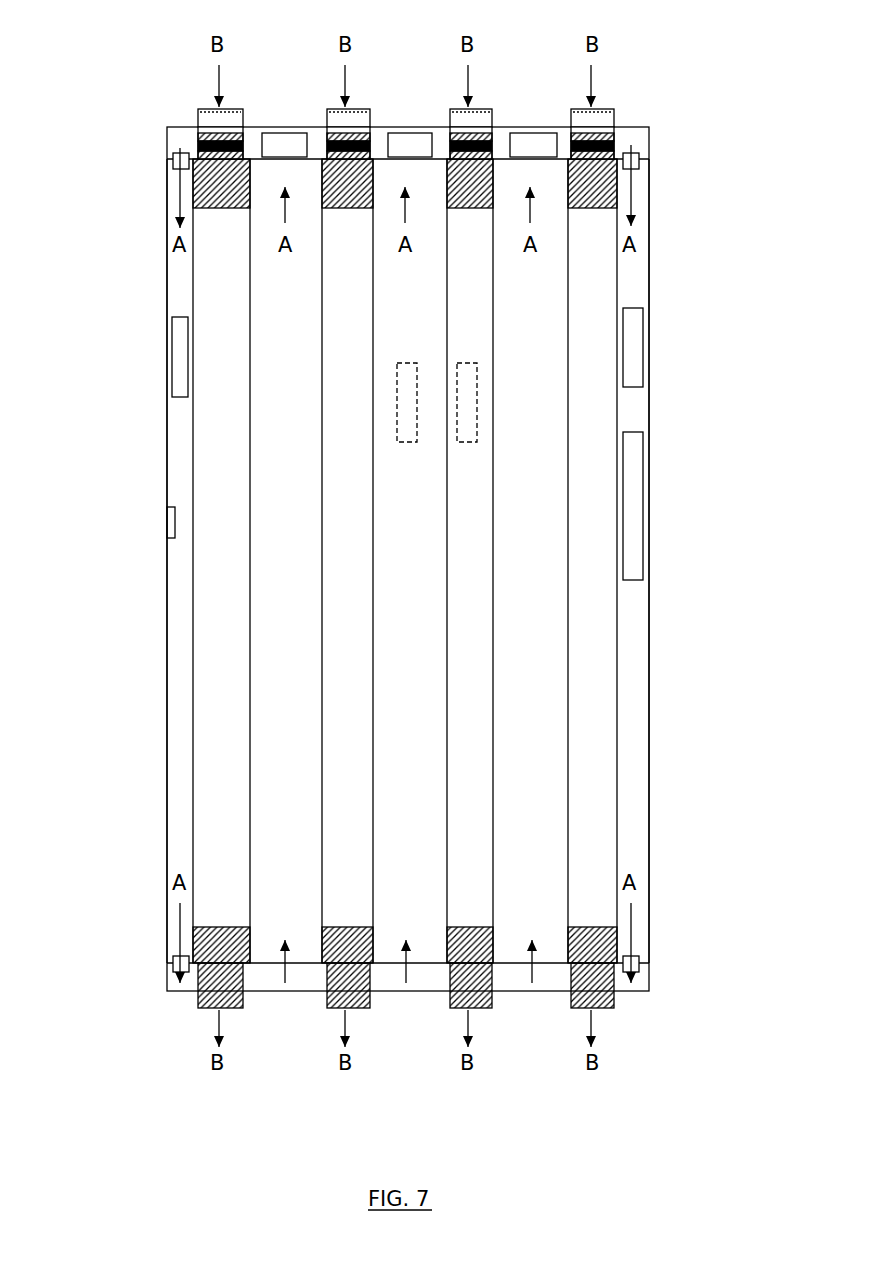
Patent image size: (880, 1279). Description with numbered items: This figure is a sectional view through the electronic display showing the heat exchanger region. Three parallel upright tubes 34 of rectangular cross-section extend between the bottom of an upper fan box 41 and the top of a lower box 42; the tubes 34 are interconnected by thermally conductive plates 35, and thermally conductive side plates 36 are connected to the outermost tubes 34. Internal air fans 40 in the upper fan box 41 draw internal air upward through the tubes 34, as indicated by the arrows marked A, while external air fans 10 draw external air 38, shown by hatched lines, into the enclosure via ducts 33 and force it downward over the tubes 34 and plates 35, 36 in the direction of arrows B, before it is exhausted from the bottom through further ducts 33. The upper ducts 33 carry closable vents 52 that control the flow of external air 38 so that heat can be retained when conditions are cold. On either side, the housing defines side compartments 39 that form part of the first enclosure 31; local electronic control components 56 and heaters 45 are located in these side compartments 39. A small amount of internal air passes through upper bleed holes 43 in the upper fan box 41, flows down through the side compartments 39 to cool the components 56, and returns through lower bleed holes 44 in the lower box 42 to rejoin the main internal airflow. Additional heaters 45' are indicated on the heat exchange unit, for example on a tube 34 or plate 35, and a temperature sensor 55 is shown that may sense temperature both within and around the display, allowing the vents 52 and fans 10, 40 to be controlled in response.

The external air fan 10 is at (213, 120).
The first enclosure 31 is at (167, 458).
The duct 33 is at (615, 130).
The tube 34 is at (303, 918).
The thermally conductive plate 35 is at (348, 543).
The thermally conductive side plate 36 is at (222, 820).
The external air 38 is at (208, 188).
The side compartment 39 is at (181, 717).
The internal air fan 40 is at (278, 143).
The upper fan box 41 is at (167, 127).
The lower box 42 is at (167, 991).
The upper bleed hole 43 is at (172, 162).
The lower bleed hole 44 is at (170, 962).
The heater 45 is at (401, 342).
The additional heater 45' is at (435, 389).
The closable vent 52 is at (197, 138).
The temperature sensor 55 is at (170, 522).
The local electronic control component 56 is at (638, 500).